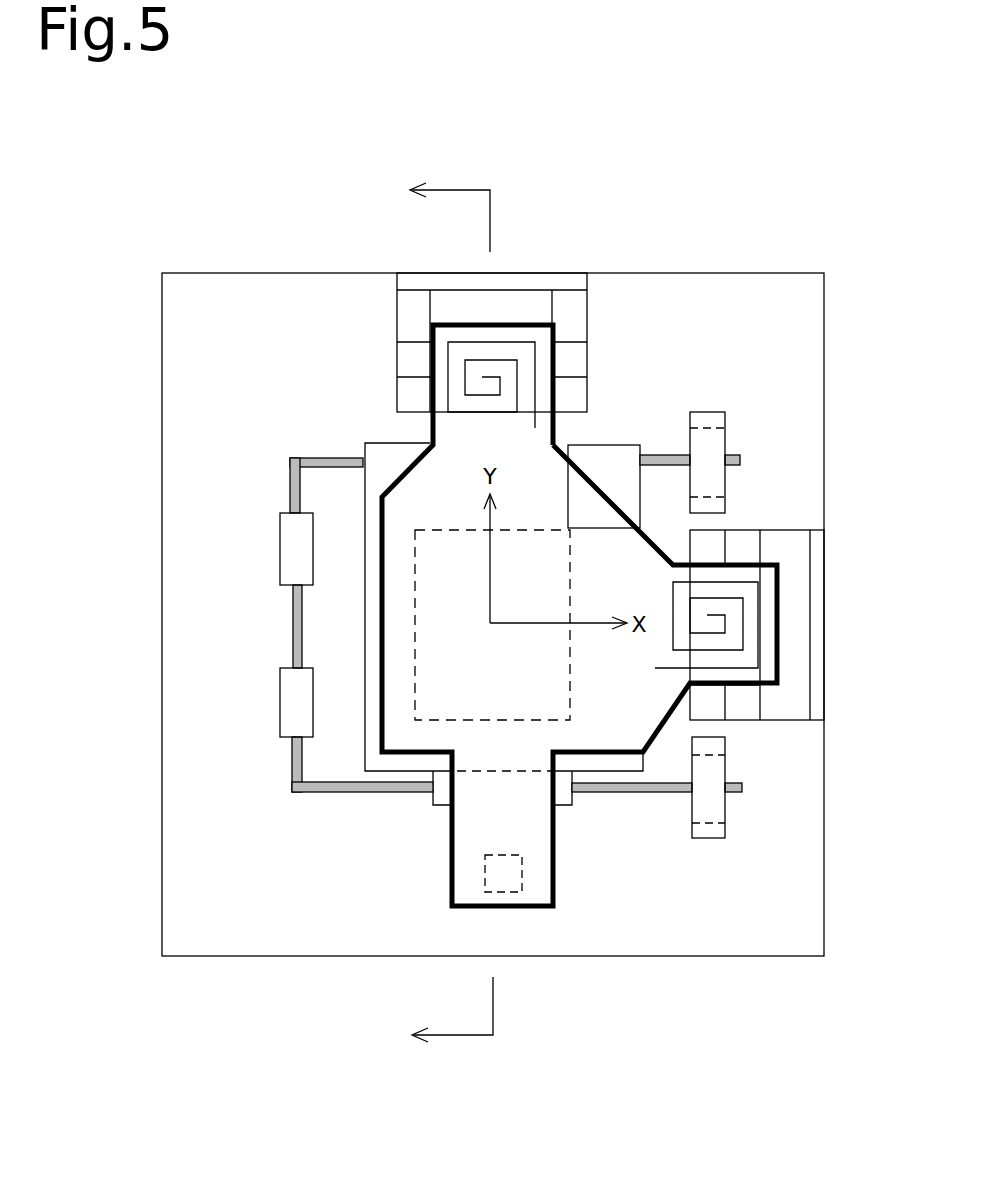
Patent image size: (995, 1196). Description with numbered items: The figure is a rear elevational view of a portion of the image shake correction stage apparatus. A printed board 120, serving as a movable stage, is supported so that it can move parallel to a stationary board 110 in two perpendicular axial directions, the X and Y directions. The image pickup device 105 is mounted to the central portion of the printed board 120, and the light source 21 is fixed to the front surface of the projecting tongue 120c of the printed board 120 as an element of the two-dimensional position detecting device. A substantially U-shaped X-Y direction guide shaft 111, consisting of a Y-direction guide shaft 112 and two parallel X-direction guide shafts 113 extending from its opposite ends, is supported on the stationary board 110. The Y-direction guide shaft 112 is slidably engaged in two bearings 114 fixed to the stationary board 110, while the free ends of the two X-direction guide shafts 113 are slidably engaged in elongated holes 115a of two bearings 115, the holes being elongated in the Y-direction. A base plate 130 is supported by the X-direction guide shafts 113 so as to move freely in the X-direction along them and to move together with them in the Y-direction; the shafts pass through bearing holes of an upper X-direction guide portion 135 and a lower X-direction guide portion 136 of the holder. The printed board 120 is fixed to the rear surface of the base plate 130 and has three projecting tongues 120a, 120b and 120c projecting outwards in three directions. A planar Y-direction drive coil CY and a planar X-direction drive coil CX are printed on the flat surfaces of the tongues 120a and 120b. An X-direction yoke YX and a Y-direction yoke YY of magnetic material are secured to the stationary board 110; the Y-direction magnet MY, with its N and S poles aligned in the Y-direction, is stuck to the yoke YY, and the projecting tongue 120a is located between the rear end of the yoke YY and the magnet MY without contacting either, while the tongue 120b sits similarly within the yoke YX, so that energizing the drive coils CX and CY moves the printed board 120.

The stationary board 110 is at (232, 273).
The X-Y direction guide shaft 111 is at (284, 617).
The Y-direction guide shaft 112 is at (290, 482).
The X-direction guide shafts 113 is at (335, 456).
The bearings 114 is at (290, 548).
The bearings 115 is at (705, 412).
The elongated holes 115a is at (725, 430).
The printed board 120 is at (397, 593).
The projecting tongue 120a is at (511, 335).
The projecting tongue 120b is at (730, 688).
The projecting tongue 120c is at (453, 903).
The base plate 130 is at (362, 632).
The upper X-direction guide portion 135 is at (608, 452).
The lower X-direction guide portion 136 is at (433, 803).
The image pickup device 105 is at (415, 702).
The light source 21 is at (515, 895).
The Y-direction yoke YY is at (572, 315).
The X-direction yoke YX is at (782, 543).
The Y-direction magnet MY is at (575, 392).
The Y-direction drive coil CY is at (462, 323).
The X-direction drive coil CX is at (762, 628).